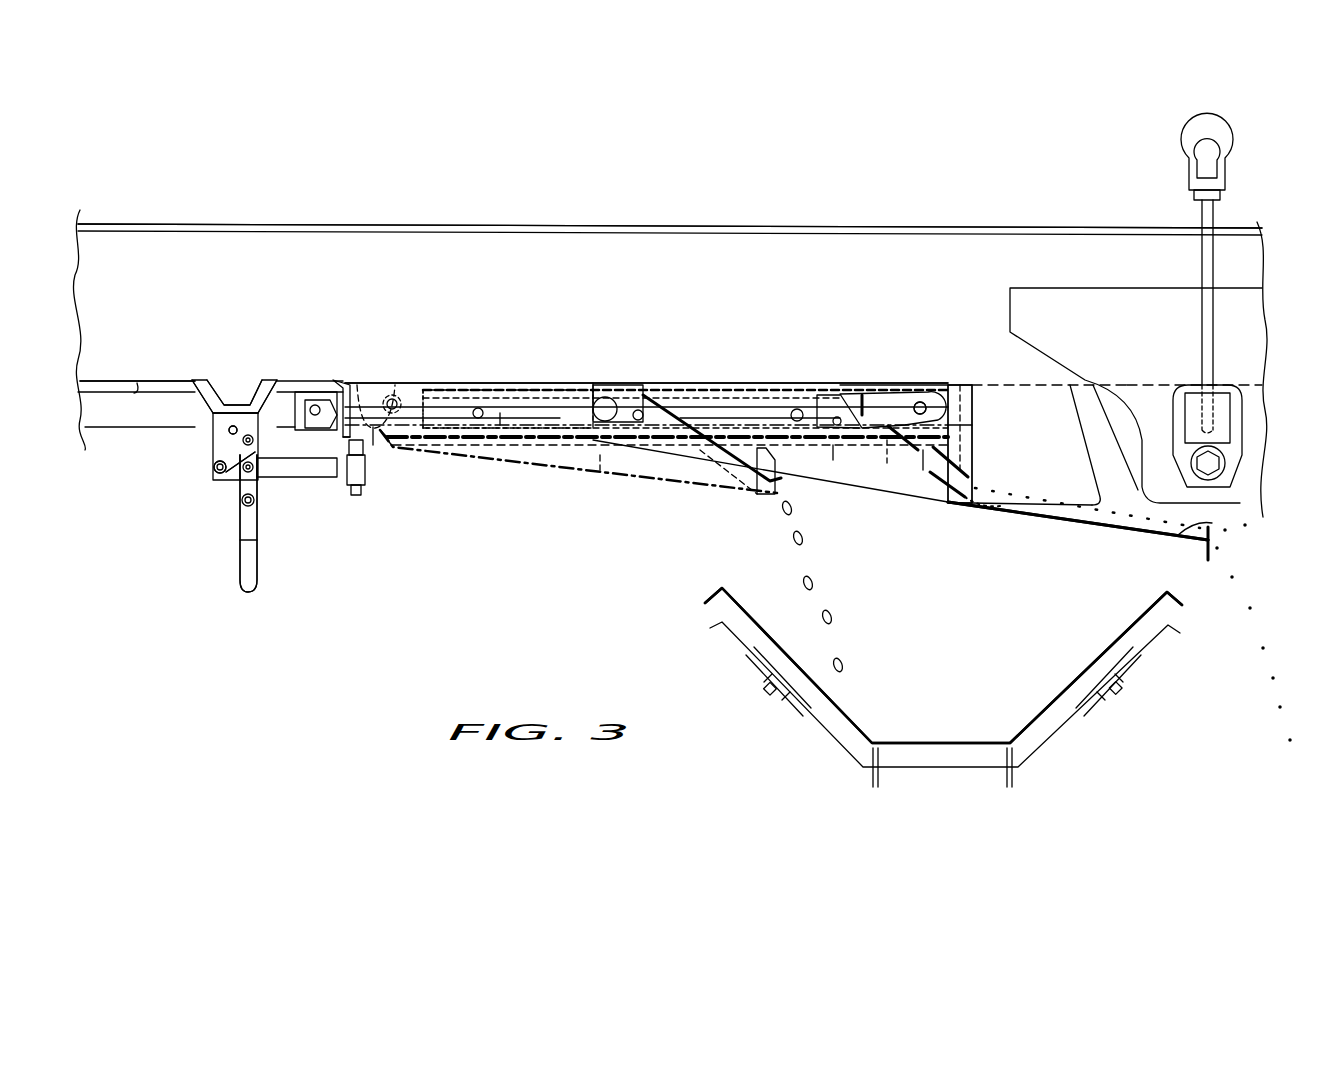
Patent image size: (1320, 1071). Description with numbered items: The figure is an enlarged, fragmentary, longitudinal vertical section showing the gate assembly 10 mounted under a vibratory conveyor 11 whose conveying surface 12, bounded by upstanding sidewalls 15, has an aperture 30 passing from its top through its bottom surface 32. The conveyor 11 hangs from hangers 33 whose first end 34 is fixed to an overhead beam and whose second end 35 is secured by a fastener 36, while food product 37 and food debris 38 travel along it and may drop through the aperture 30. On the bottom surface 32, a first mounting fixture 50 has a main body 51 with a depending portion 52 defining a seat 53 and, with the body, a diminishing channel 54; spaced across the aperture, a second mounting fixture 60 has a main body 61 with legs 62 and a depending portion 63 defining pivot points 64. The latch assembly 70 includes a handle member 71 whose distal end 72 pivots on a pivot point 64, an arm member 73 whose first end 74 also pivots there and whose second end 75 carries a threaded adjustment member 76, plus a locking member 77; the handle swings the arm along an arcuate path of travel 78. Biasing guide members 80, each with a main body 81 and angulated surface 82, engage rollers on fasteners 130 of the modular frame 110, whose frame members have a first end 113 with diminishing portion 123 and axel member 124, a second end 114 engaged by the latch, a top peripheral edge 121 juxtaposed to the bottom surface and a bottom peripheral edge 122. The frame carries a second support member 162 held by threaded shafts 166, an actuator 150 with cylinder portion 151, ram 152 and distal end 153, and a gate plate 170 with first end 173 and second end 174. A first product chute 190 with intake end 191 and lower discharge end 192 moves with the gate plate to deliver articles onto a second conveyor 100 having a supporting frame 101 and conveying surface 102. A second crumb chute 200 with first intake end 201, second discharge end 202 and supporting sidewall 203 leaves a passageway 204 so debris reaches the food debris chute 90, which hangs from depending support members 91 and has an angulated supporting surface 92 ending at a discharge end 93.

The gate assembly 10 is at (672, 343).
The vibratory conveyor 11 is at (975, 240).
The conveying surface 12 is at (1042, 386).
The sidewalls 15 is at (341, 260).
The apertures 30 is at (725, 375).
The bottom surface 32 is at (575, 370).
The hangers 33 is at (137, 385).
The first end 34 is at (1228, 147).
The second end 35 is at (1218, 415).
The fastener 36 is at (1210, 463).
The food product 37 is at (822, 618).
The food debris 38 is at (1248, 567).
The first mounting fixture 50 is at (931, 382).
The main body 51 is at (975, 383).
The depending portion 52 is at (972, 433).
The seat 53 is at (906, 448).
The diminishing channel 54 is at (940, 405).
The second mounting fixture 60 is at (262, 350).
The main body 61 is at (235, 400).
The legs 62 is at (208, 405).
The depending portion 63 is at (213, 440).
The pivot points 64 is at (268, 444).
The latch assembly 70 is at (232, 585).
The handle member 71 is at (250, 585).
The distal end 72 is at (232, 435).
The arm member 73 is at (284, 465).
The first end 74 is at (235, 475).
The second end 75 is at (373, 445).
The threaded adjustment member 76 is at (353, 492).
The locking member 77 is at (265, 480).
The path of travel 78 is at (262, 555).
The biasing guide members 80 is at (360, 392).
The main body 81 is at (388, 396).
The angulated surface 82 is at (400, 400).
The food debris chute 90 is at (1068, 522).
The depending support members 91 is at (1082, 398).
The angulated supporting surface 92 is at (1100, 515).
The discharge end 93 is at (1215, 545).
The second conveyor 100 is at (1085, 720).
The supporting frame 101 is at (1030, 757).
The conveying surface 102 is at (918, 743).
The modular frame 110 is at (878, 392).
The first end 113 is at (895, 395).
The second end 114 is at (372, 440).
The top peripheral edge 121 is at (555, 382).
The bottom peripheral edge 122 is at (385, 448).
The diminishing portion 123 is at (887, 465).
The axel member 124 is at (923, 470).
The fasteners 130 is at (430, 381).
The actuator 150 is at (100, 430).
The cylinder portion 151 is at (110, 392).
The ram 152 is at (494, 455).
The distal end 153 is at (555, 450).
The second support member 162 is at (782, 388).
The threaded shafts 166 is at (833, 458).
The gate plate 170 is at (633, 393).
The first end 173 is at (829, 392).
The second end 174 is at (605, 395).
The first product chute 190 is at (712, 420).
The intake end 191 is at (863, 388).
The discharge end 192 is at (710, 470).
The second crumb chute 200 is at (628, 468).
The first intake end 201 is at (405, 450).
The second discharge end 202 is at (729, 492).
The supporting sidewall 203 is at (625, 500).
The passageway 204 is at (775, 497).